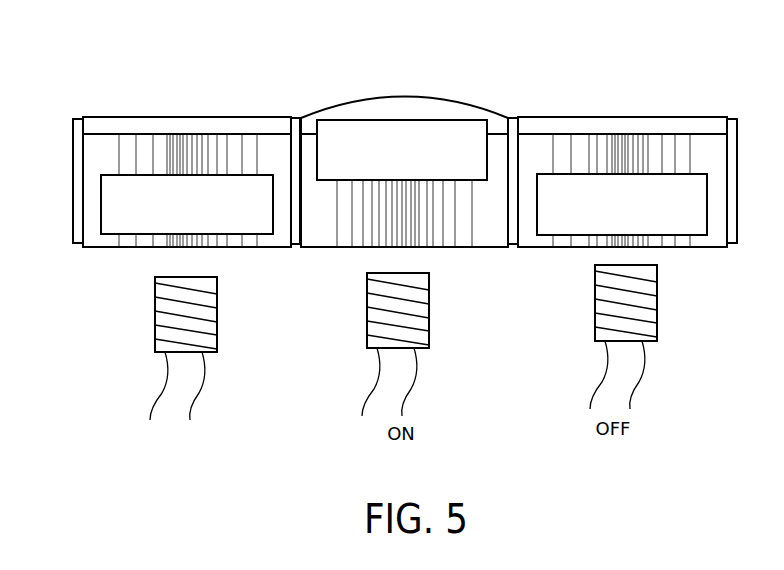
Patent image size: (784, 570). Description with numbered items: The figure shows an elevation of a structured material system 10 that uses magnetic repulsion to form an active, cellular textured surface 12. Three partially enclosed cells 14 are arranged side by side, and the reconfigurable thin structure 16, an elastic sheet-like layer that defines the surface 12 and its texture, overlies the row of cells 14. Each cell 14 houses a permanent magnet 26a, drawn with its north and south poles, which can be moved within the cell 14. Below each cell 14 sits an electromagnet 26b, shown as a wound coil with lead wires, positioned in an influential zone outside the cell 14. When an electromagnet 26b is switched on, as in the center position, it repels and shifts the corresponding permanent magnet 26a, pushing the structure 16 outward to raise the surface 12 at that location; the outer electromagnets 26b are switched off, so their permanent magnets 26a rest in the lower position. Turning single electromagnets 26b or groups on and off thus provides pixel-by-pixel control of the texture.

The structured material system 10 is at (172, 52).
The surface 12 is at (345, 97).
The cell 14 is at (73, 178).
The reconfigurable thin structure 16 is at (555, 123).
The permanent magnet 26a is at (160, 217).
The electromagnet 26b is at (155, 311).